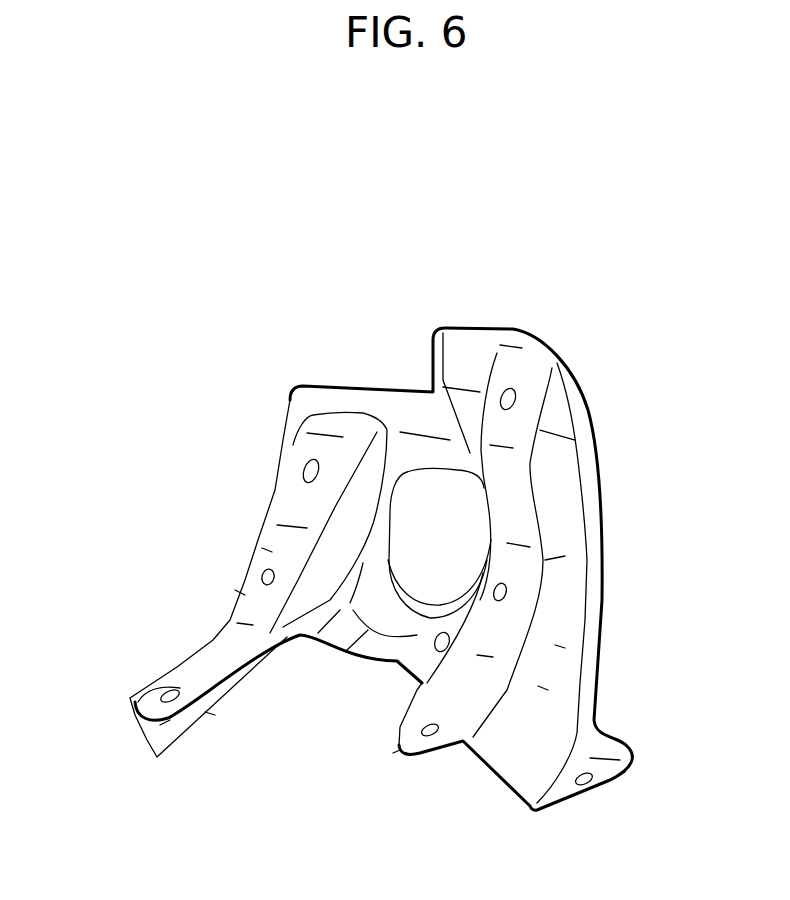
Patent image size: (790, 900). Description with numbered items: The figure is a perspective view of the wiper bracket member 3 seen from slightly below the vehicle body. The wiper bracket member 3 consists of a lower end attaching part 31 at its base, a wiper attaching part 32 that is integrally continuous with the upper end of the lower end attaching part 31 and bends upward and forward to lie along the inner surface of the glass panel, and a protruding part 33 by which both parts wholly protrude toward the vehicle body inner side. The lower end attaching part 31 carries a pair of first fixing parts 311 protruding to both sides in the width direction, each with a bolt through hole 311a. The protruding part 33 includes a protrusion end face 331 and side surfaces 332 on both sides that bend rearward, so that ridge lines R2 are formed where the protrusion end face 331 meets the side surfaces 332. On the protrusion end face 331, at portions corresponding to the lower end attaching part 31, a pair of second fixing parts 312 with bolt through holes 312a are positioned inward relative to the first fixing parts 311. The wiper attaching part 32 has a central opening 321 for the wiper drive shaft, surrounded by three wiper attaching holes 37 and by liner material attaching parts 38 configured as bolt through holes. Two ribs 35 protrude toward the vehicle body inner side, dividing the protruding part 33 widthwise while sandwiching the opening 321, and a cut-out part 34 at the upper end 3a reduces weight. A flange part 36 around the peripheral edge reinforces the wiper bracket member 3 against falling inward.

The wiper bracket member 3 is at (520, 258).
The upper end 3a is at (517, 328).
The lower end attaching part 31 is at (550, 740).
The first fixing part 311 is at (625, 766).
The bolt through hole 311a is at (580, 790).
The second fixing part 312 is at (163, 720).
The bolt through hole 312a is at (140, 703).
The wiper attaching part 32 is at (565, 443).
The opening 321 is at (437, 585).
The protruding part 33 is at (549, 561).
The protrusion end face 331 is at (268, 550).
The side surface 332 is at (207, 712).
The cut-out part 34 is at (320, 373).
The rib 35 is at (279, 505).
The flange part 36 is at (590, 402).
The wiper attaching hole 37 is at (300, 468).
The liner material attaching part 38 is at (262, 576).
The ridge line R2 is at (240, 593).